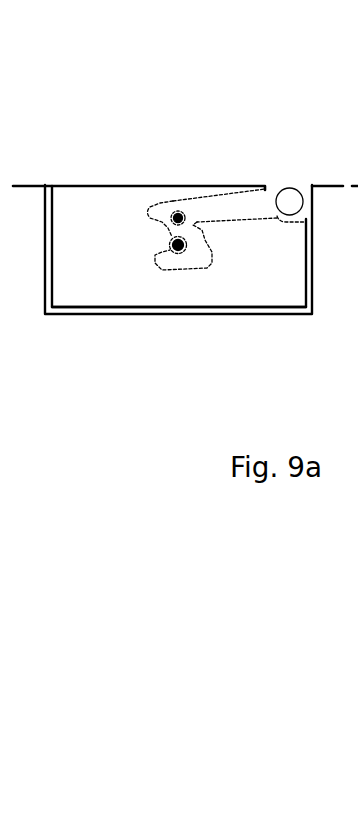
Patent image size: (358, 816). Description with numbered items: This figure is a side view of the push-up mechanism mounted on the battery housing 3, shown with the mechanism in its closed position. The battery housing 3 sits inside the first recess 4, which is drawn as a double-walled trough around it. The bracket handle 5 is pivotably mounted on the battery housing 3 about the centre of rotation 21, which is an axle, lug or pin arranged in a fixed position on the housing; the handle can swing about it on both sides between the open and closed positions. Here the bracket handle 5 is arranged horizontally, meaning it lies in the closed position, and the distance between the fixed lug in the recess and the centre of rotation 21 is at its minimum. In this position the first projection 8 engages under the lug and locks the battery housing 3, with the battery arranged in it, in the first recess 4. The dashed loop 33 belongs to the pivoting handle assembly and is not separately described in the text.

The battery housing 3 is at (102, 213).
The first recess 4 is at (278, 309).
The bracket handle 5 is at (230, 208).
The first projection 8 is at (181, 257).
The centre of rotation 21 is at (177, 212).
The lever extension 33 is at (162, 221).